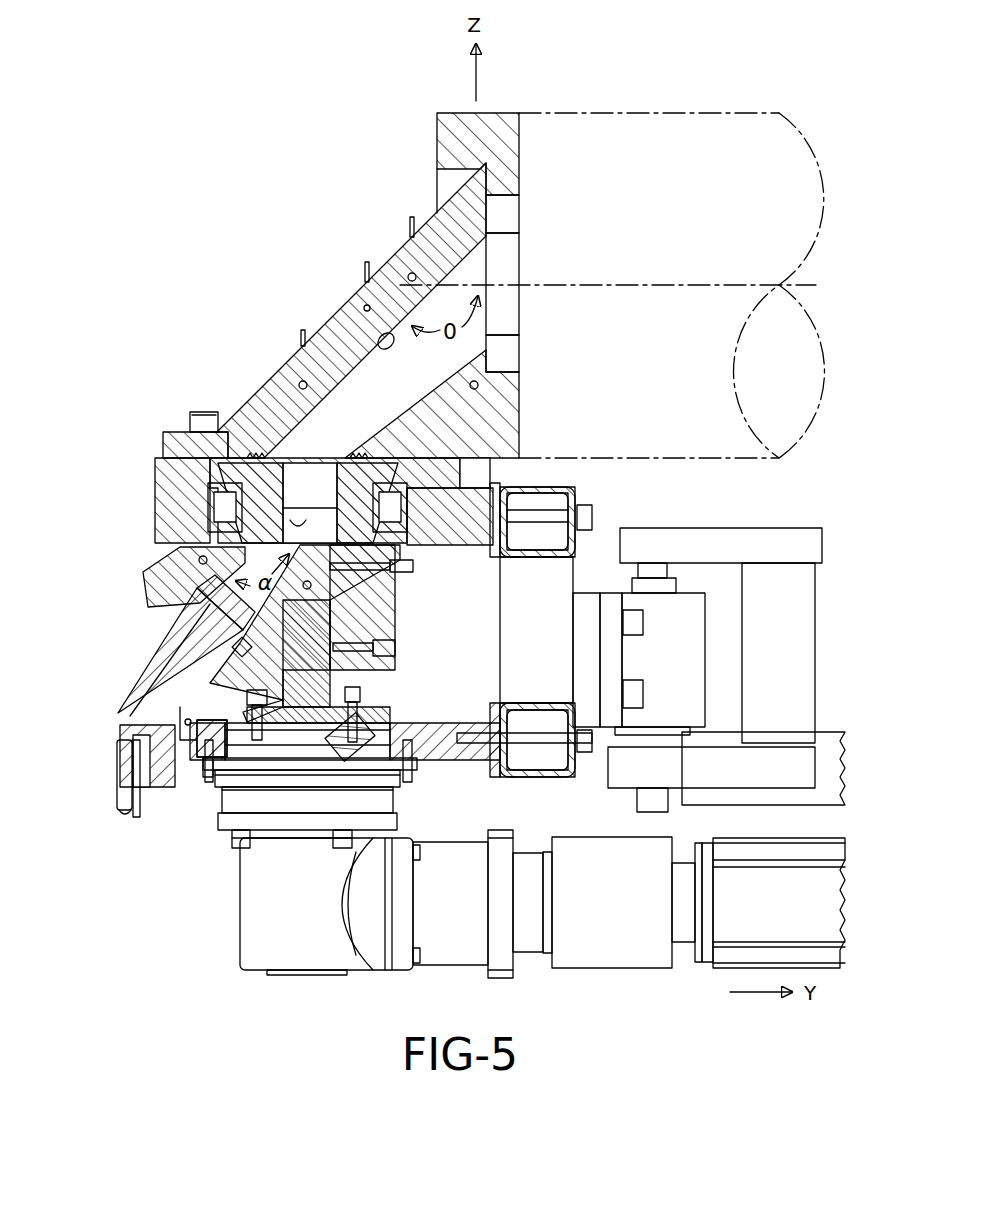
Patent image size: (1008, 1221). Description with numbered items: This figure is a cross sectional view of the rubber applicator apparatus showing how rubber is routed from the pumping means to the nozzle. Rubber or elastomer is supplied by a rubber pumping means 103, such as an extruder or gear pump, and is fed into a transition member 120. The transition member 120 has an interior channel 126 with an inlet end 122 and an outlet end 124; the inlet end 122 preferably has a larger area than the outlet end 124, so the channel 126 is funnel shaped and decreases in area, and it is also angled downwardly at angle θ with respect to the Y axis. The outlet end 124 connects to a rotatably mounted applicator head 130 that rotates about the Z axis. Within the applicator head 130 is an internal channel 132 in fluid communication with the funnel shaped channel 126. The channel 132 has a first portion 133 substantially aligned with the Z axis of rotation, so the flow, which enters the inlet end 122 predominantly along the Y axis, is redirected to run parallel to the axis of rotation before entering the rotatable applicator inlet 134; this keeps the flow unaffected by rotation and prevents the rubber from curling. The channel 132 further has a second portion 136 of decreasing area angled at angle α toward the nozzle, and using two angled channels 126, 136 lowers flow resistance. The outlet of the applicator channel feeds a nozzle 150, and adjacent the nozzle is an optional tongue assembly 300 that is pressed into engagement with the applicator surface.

The rubber pumping means 103 is at (672, 167).
The transition member 120 is at (362, 287).
The inlet end 122 is at (497, 265).
The outlet end 124 is at (335, 462).
The interior channel 126 is at (383, 334).
The applicator head 130 is at (160, 573).
The internal channel 132 is at (255, 470).
The first portion 133 is at (290, 465).
The rotatable applicator inlet 134 is at (307, 465).
The second portion 136 is at (240, 545).
The nozzle 150 is at (118, 688).
The tongue assembly 300 is at (113, 804).